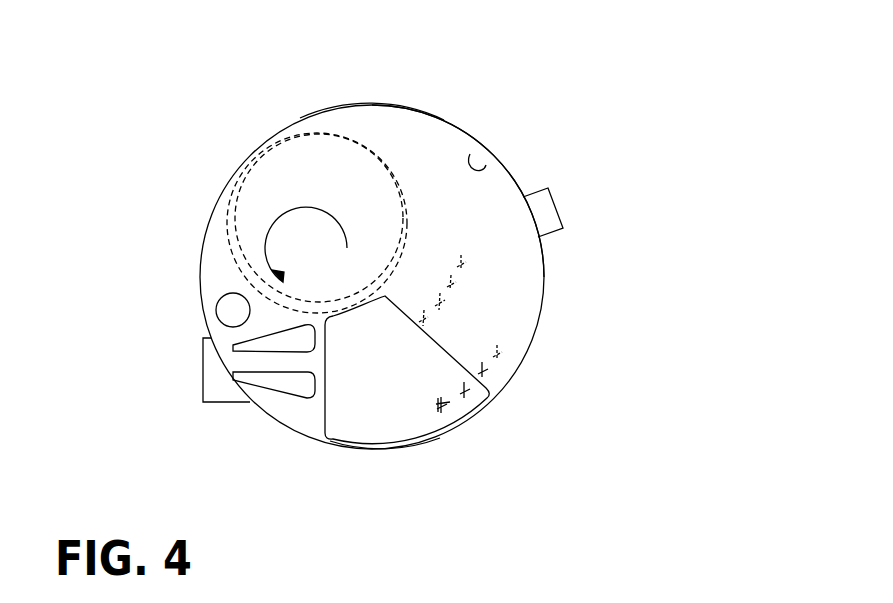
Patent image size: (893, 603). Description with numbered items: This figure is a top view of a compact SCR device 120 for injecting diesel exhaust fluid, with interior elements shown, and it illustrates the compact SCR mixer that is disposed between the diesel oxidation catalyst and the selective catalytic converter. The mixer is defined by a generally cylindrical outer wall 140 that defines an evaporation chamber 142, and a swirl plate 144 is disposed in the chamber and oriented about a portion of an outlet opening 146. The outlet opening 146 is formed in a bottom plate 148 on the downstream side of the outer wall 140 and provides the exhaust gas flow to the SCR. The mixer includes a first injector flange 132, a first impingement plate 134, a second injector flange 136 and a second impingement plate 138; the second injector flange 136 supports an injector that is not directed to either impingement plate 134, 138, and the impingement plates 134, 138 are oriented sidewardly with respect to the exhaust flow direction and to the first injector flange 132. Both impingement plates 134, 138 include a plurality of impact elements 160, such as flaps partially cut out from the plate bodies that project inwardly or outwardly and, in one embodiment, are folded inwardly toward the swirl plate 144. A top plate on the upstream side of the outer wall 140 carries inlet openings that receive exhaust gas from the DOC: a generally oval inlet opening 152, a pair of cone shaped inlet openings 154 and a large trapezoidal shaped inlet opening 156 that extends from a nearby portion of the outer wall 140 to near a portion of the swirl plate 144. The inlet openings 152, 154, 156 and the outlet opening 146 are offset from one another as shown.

The compact SCR device 120 is at (547, 132).
The first injector flange 132 is at (203, 372).
The first impingement plate 134 is at (450, 421).
The second injector flange 136 is at (557, 205).
The second impingement plate 138 is at (417, 333).
The outer wall 140 is at (535, 336).
The evaporation chamber 142 is at (470, 156).
The swirl plate 144 is at (222, 247).
The outlet opening 146 is at (330, 135).
The bottom plate 148 is at (422, 148).
The oval inlet opening 152 is at (226, 311).
The cone shaped inlet openings 154 is at (293, 337).
The trapezoidal shaped inlet opening 156 is at (343, 422).
The impact elements 160 is at (426, 320).